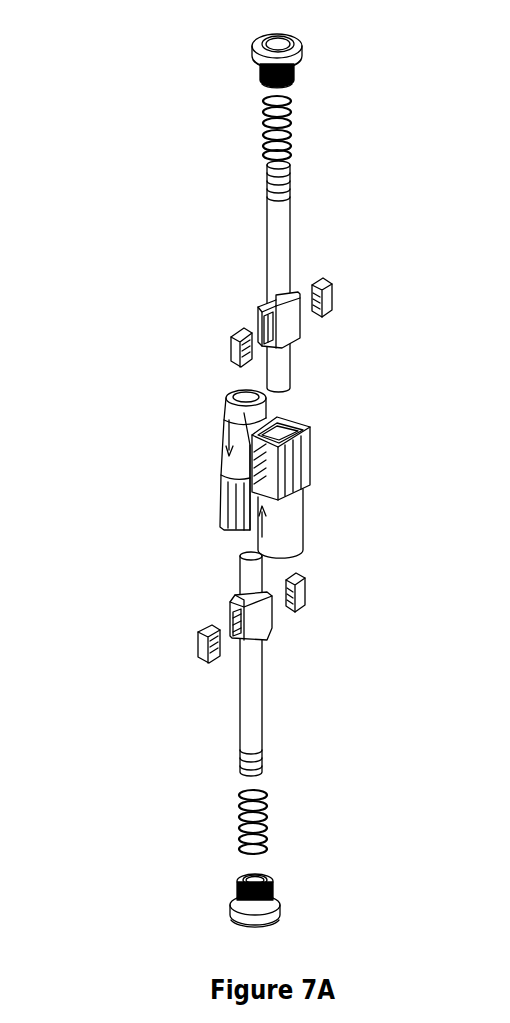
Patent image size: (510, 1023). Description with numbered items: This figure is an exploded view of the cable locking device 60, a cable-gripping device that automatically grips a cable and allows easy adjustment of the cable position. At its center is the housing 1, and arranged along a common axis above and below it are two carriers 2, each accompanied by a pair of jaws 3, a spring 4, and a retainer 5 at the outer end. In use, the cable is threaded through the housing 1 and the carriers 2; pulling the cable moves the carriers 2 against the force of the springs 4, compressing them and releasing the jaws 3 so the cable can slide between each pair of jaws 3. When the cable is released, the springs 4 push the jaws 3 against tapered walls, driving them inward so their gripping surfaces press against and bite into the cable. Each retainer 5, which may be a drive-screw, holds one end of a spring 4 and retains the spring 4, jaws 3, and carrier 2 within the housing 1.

The cable locking device 60 is at (170, 425).
The housing 1 is at (304, 507).
The carrier 2 is at (275, 230).
The jaw 3 is at (328, 295).
The spring 4 is at (263, 117).
The retainer 5 is at (252, 44).